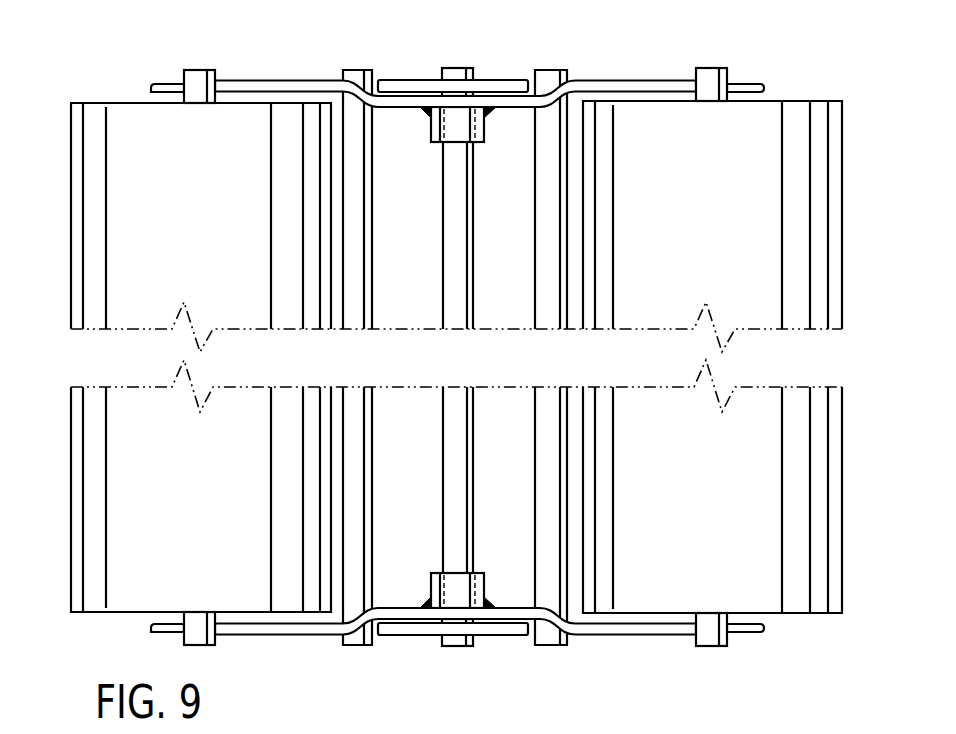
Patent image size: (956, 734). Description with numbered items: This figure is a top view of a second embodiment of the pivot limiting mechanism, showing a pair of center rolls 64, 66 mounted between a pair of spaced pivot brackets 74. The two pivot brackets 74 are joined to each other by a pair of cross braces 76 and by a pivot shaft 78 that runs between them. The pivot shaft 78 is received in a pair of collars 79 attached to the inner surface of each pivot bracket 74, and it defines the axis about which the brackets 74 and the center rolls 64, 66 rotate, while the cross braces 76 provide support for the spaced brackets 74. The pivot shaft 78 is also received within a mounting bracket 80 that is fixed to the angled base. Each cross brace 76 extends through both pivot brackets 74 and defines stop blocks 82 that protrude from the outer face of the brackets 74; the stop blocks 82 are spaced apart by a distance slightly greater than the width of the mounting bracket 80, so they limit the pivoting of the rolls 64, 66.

The center roll 64 is at (72, 200).
The center roll 66 is at (845, 232).
The pivot bracket 74 is at (283, 81).
The cross brace 76 is at (375, 276).
The pivot shaft 78 is at (473, 497).
The collar 79 is at (484, 128).
The mounting bracket 80 is at (495, 636).
The stop block 82 is at (359, 646).